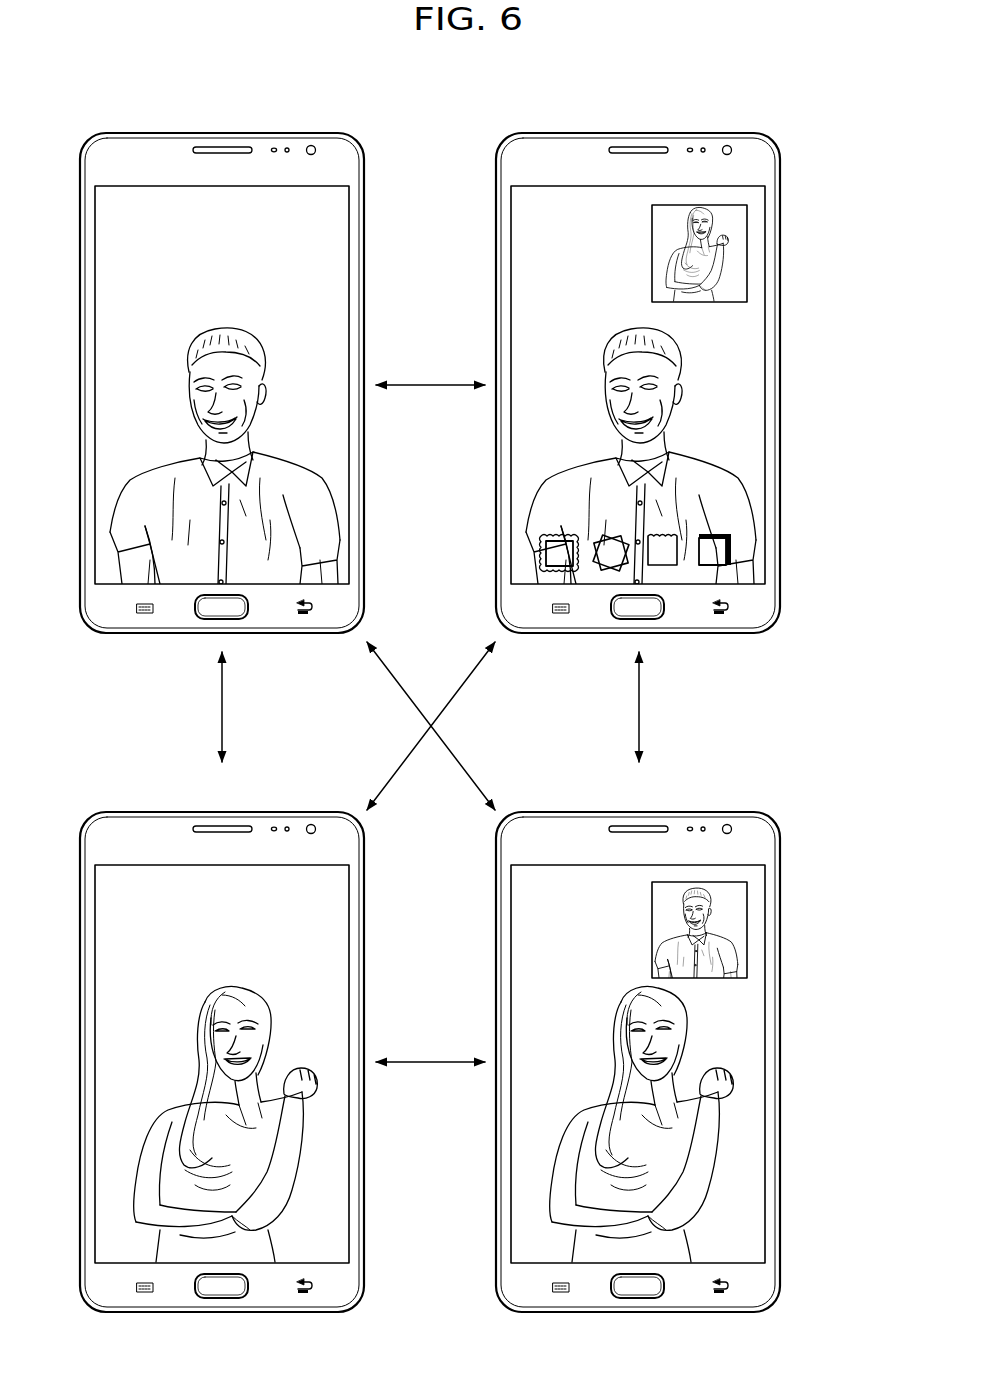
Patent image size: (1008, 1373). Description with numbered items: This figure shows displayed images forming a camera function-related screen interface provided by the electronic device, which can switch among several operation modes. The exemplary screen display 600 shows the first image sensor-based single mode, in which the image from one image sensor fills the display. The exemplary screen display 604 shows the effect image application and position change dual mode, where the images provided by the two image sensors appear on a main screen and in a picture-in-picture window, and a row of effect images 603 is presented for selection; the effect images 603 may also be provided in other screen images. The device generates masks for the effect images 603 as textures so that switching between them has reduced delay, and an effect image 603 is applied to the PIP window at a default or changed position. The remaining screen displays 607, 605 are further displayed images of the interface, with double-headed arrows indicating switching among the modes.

The exemplary screen display 600 is at (265, 133).
The exemplary screen display 604 is at (677, 133).
The electronic device (counterpart terminal) 607 is at (265, 812).
The electronic device displaying user image in sub-window 605 is at (677, 812).
The effect image 603 is at (731, 557).